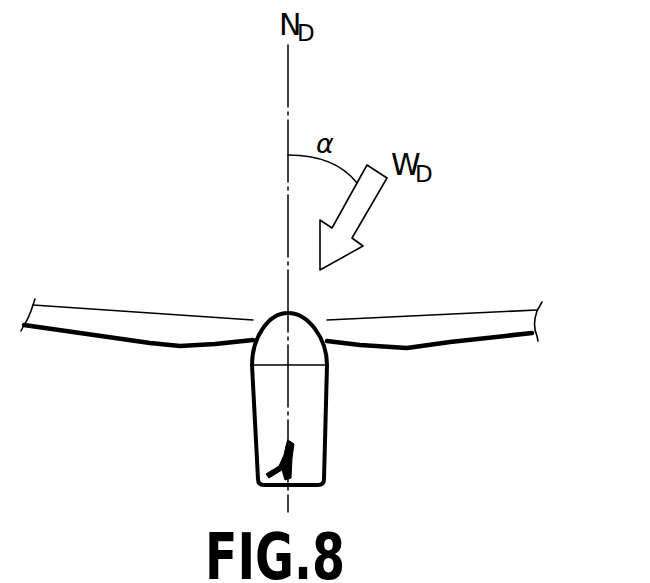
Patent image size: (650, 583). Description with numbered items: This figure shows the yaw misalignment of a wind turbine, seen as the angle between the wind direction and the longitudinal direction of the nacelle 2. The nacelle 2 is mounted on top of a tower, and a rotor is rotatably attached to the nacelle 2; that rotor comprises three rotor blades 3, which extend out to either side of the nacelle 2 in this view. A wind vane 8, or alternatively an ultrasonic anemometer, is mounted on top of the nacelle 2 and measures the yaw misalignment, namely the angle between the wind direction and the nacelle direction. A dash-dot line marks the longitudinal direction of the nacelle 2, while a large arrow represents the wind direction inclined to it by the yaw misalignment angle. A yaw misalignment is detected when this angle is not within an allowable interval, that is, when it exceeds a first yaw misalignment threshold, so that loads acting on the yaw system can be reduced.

The nacelle 2 is at (307, 462).
The rotor blades 3 is at (458, 328).
The wind vane 8 is at (285, 460).